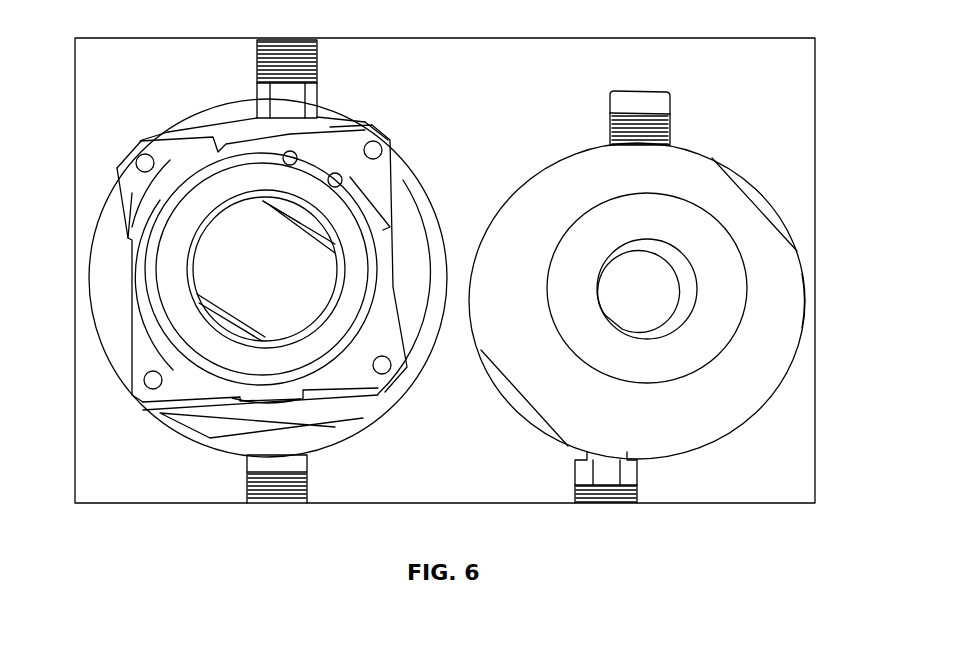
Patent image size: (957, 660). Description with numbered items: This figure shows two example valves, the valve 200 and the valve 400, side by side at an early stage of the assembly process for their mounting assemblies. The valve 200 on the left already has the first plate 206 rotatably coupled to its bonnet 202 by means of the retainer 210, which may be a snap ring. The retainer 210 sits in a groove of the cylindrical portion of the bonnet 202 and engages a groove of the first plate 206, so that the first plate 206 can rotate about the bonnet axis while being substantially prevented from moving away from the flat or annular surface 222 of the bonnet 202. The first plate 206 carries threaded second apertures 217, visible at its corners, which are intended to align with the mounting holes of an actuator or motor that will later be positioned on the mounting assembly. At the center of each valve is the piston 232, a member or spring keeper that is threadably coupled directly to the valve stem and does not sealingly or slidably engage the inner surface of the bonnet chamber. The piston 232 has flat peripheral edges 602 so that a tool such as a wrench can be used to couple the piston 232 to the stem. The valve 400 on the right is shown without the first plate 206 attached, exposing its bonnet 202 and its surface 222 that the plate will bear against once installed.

The valve 200 is at (416, 271).
The bonnet 202 is at (116, 270).
The first plate 206 is at (240, 137).
The retainer 210 is at (270, 380).
The second apertures 217 is at (145, 163).
The piston 232 is at (286, 278).
The valve 400 is at (717, 282).
The flat peripheral edges 602 is at (300, 223).
The surface 222 is at (803, 292).